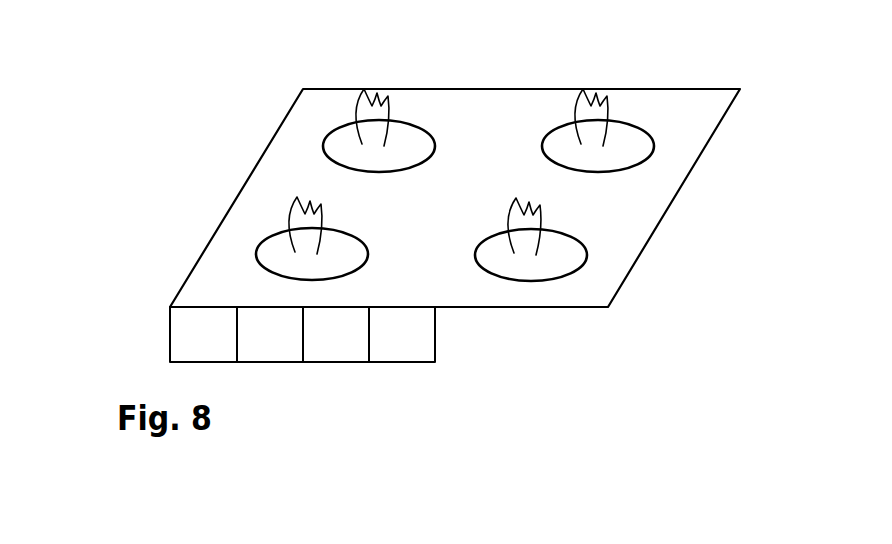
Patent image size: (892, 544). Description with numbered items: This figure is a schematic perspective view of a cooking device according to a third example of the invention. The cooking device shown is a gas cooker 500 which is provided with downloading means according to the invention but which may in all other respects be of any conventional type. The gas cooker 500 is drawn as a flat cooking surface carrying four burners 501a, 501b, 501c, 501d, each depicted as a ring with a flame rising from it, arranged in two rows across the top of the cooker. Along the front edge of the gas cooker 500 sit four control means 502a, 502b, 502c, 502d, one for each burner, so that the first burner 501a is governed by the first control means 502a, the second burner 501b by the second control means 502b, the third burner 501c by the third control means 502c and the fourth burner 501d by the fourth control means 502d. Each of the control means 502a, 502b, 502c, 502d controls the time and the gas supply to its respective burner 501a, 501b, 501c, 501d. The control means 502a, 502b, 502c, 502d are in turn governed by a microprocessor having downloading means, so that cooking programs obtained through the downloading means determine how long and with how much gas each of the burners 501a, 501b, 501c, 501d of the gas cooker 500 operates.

The gas cooker 500 is at (553, 333).
The burner 501a is at (272, 247).
The burner 501b is at (343, 140).
The burner 501c is at (640, 146).
The burner 501d is at (565, 257).
The control means 502a is at (231, 351).
The control means 502b is at (297, 351).
The control means 502c is at (363, 351).
The control means 502d is at (430, 351).